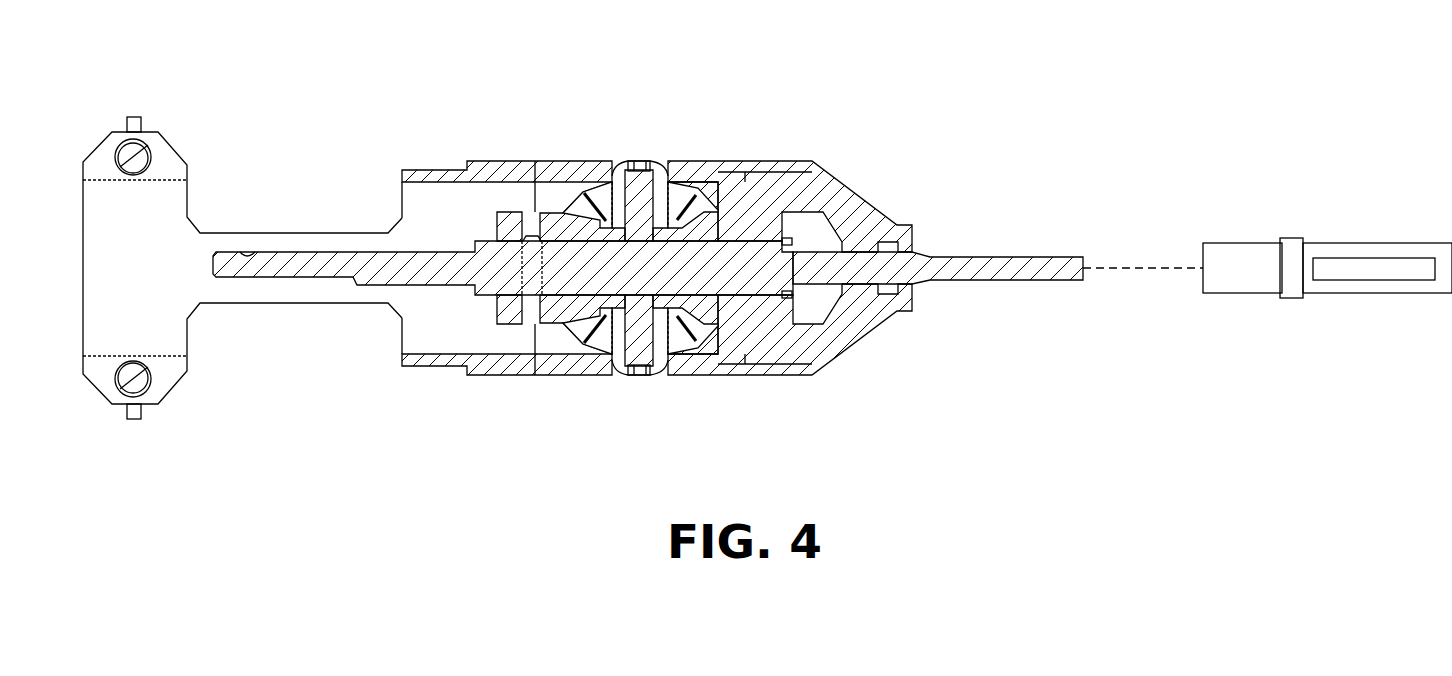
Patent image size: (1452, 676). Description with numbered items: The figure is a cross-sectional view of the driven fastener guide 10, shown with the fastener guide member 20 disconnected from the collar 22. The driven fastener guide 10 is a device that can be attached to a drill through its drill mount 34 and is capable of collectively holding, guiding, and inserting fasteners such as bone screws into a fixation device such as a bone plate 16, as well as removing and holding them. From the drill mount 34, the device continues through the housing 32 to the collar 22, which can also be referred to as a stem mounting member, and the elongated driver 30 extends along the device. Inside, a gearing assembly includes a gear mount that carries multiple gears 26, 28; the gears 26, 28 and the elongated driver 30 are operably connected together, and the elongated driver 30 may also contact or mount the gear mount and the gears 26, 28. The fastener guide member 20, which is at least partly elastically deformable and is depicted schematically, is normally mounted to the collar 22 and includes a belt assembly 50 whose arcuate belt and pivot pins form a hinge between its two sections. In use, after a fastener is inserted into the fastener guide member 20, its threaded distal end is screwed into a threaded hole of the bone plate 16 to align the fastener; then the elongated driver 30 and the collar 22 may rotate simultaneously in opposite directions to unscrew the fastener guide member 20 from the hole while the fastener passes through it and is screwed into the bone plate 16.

The driven fastener guide 10 is at (583, 235).
The bone plate 16 is at (1380, 257).
The fastener guide member 20 is at (1258, 296).
The collar 22 is at (852, 328).
The gear 26 is at (568, 330).
The gear 28 is at (678, 190).
The elongated driver 30 is at (980, 256).
The housing 32 is at (553, 161).
The drill mount 34 is at (260, 303).
The belt assembly 50 is at (1290, 238).